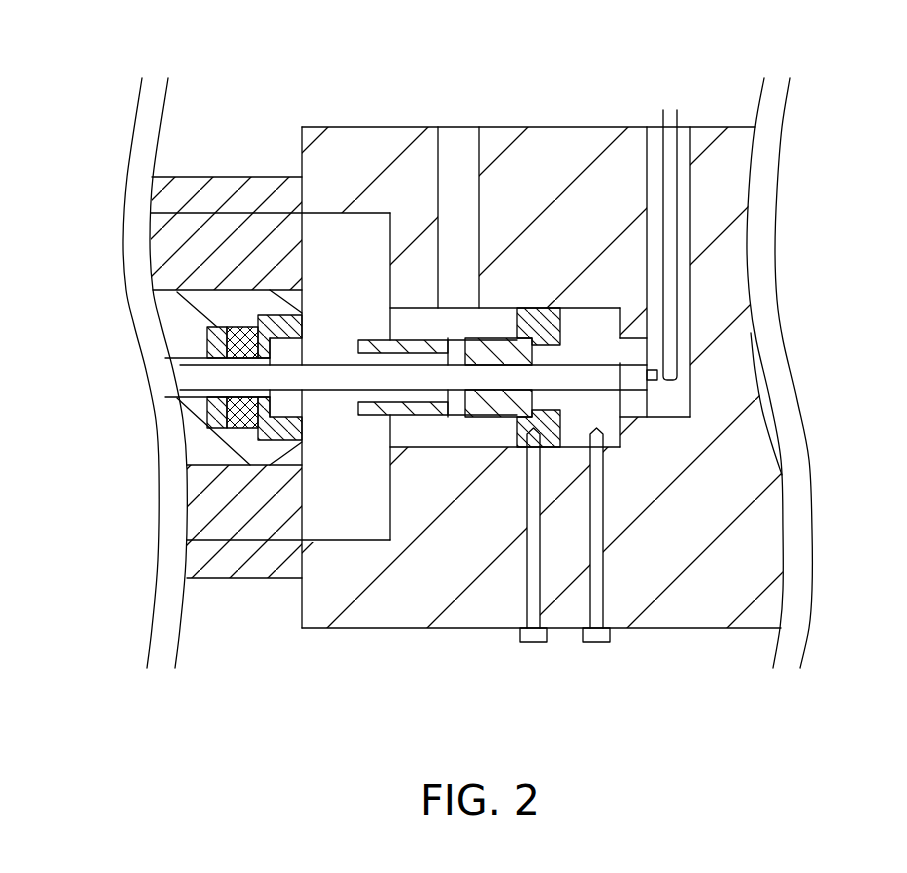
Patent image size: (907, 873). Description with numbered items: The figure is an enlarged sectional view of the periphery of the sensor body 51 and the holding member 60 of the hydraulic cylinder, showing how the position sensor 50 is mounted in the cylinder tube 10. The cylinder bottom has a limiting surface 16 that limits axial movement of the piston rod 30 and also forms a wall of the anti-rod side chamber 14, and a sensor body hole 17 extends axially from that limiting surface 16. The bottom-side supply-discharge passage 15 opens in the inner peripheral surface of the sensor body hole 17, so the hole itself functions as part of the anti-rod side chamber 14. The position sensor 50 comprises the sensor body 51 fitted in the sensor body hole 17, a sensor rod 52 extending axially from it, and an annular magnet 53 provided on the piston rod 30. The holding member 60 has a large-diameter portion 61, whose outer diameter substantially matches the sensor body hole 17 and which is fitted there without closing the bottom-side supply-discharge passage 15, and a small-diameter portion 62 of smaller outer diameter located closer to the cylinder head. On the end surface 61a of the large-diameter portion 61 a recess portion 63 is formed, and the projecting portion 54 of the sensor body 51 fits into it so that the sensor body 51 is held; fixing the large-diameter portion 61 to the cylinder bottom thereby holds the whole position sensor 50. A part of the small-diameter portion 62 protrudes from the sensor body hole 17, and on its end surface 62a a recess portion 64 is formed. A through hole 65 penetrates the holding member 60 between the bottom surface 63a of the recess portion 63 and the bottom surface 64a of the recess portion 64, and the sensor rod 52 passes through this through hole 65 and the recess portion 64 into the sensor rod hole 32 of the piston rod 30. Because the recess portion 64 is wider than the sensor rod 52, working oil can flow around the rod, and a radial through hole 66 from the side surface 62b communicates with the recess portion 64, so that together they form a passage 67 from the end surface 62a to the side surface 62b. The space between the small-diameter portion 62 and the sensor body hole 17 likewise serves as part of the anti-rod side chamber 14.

The cylinder tube 10 is at (709, 634).
The anti-rod side chamber 14 is at (347, 523).
The bottom-side supply-discharge passage 15 is at (446, 128).
The limiting surface 16 is at (388, 270).
The sensor body hole 17 is at (385, 325).
The piston rod 30 is at (193, 450).
The sensor rod hole 32 is at (195, 379).
The position sensor 50 is at (690, 308).
The sensor body 51 is at (602, 398).
The sensor rod 52 is at (178, 364).
The annular magnet 53 is at (230, 432).
The projecting portion 54 is at (547, 350).
The holding member 60 is at (482, 308).
The large-diameter portion 61 is at (513, 417).
The end surface of the large-diameter portion 61a is at (548, 328).
The small-diameter portion 62 is at (524, 436).
The end surface of the small-diameter portion 62a is at (353, 340).
The side surface of the small-diameter portion 62b is at (518, 300).
The recess portion 63 is at (600, 440).
The bottom surface of the recess portion 63a is at (650, 352).
The recess portion 64 is at (400, 400).
The bottom surface of the recess portion 64a is at (432, 414).
The through hole 65 is at (455, 370).
The through hole 66 is at (460, 416).
The passage 67 is at (457, 417).